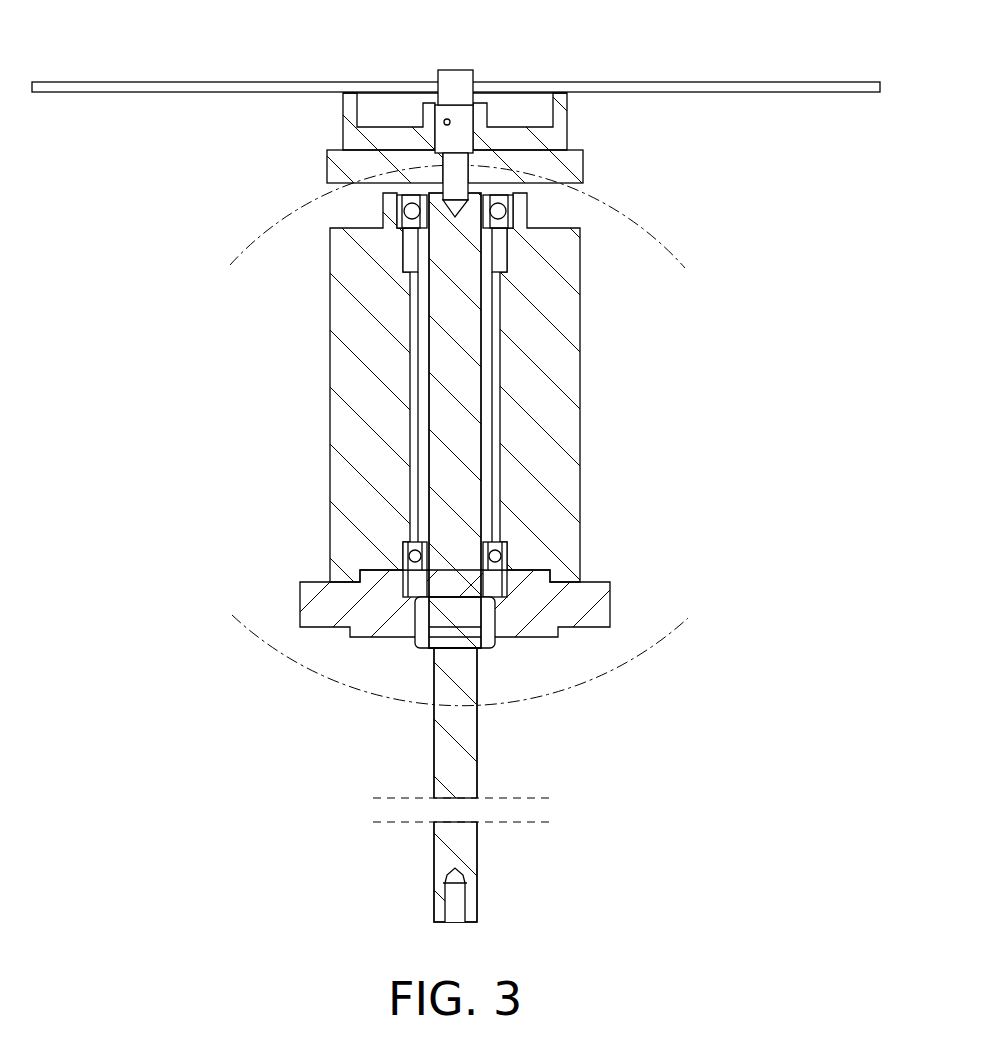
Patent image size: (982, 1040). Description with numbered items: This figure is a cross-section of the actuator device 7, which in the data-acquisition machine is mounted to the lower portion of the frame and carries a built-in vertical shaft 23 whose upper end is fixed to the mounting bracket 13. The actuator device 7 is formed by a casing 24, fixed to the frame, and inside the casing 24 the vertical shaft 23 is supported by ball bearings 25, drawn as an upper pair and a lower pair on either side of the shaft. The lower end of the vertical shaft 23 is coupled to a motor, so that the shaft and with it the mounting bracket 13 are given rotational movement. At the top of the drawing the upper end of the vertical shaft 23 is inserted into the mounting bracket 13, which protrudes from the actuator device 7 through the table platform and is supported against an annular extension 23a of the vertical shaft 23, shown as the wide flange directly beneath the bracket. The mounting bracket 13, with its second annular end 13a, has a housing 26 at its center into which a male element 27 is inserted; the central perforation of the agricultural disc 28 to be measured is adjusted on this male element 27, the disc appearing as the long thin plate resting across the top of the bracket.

The actuator device 7 is at (312, 415).
The mounting bracket 13 is at (569, 130).
The second annular end 13a is at (348, 101).
The vertical shaft 23 is at (452, 334).
The annular extension 23a is at (565, 170).
The casing 24 is at (588, 437).
The ball bearings 25 is at (502, 210).
The housing 26 is at (486, 104).
The male element 27 is at (458, 84).
The agricultural disc 28 is at (131, 87).